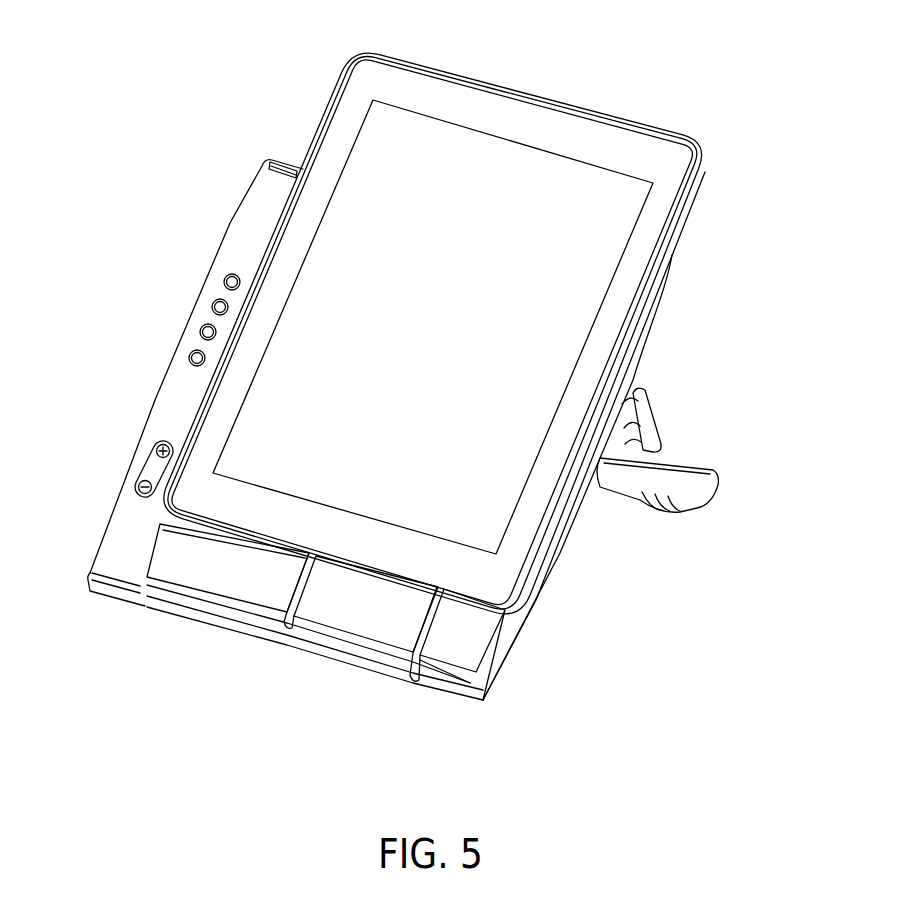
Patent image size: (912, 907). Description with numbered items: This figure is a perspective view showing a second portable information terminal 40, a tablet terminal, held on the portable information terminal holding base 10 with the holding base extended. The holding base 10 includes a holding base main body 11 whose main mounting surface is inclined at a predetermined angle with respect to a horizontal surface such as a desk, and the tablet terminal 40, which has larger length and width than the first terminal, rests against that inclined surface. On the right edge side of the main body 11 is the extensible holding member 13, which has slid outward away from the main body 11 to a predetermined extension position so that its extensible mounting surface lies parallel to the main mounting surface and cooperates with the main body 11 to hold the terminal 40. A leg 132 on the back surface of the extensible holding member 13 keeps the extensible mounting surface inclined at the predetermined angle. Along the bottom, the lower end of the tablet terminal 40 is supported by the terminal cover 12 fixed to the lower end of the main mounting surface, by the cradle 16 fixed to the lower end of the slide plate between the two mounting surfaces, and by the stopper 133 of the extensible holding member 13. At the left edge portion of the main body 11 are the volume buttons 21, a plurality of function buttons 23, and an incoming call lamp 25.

The portable information terminal holding base 10 is at (698, 283).
The holding base main body 11 is at (248, 227).
The terminal cover 12 is at (217, 585).
The extensible holding member 13 is at (556, 549).
The cradle 16 is at (355, 618).
The volume buttons 21 is at (140, 482).
The function buttons 23 is at (188, 355).
The incoming call lamp 25 is at (291, 163).
The second portable information terminal 40 is at (517, 93).
The leg 132 is at (687, 478).
The stopper 133 is at (453, 673).